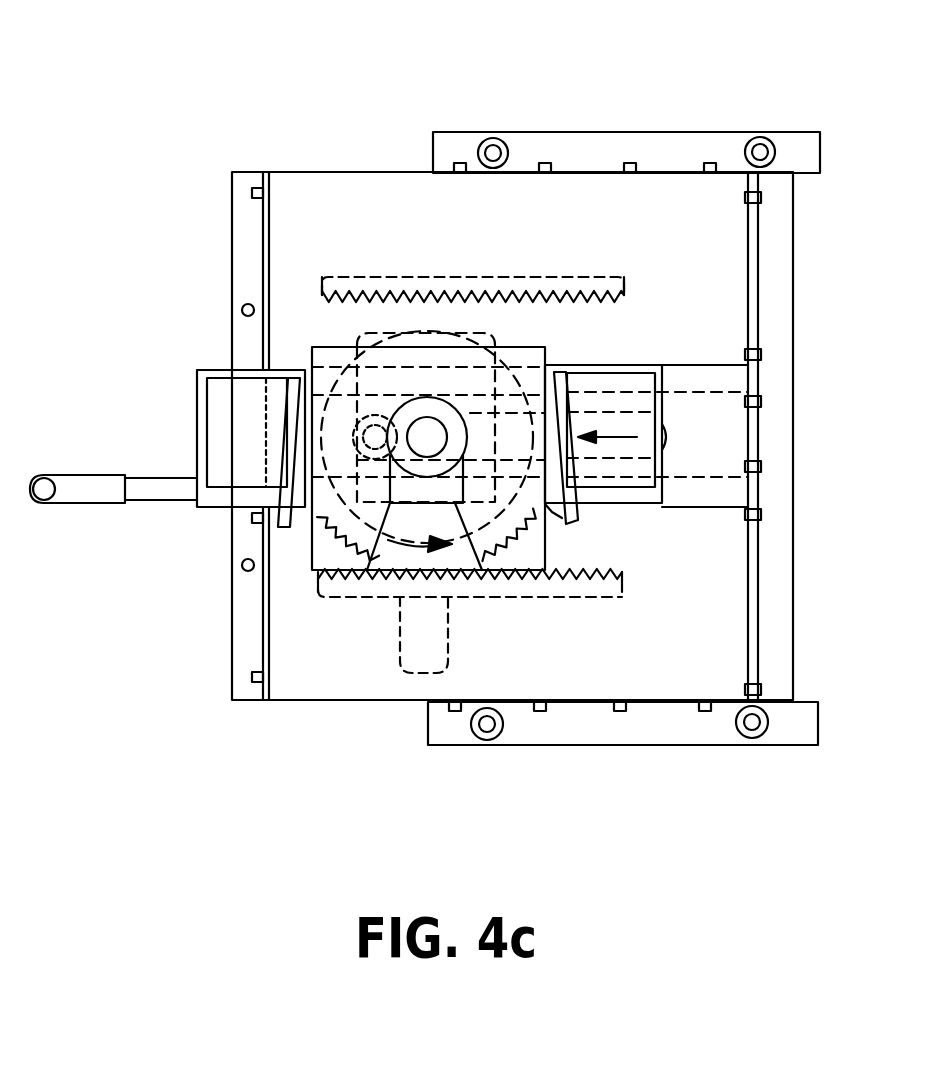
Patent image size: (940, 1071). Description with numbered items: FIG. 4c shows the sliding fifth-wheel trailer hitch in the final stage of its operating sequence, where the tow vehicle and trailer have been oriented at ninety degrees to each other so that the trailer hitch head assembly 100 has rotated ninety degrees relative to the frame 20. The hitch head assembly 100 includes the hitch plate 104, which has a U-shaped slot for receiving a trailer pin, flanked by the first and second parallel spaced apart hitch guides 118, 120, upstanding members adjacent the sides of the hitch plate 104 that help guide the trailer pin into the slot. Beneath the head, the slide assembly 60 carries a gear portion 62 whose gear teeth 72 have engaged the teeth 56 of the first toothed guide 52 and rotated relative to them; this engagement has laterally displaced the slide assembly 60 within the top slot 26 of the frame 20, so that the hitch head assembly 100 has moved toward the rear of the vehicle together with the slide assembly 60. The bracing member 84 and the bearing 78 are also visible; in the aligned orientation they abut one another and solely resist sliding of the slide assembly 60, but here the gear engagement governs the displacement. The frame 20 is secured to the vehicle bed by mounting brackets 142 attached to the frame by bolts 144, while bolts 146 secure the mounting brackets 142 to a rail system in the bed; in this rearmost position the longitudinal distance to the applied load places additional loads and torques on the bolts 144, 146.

The frame 20 is at (733, 230).
The top slot 26 is at (620, 413).
The first toothed guide 52 is at (592, 600).
The teeth 56 is at (590, 570).
The slide assembly 60 is at (456, 372).
The gear portion 62 is at (340, 510).
The gear teeth 72 is at (543, 508).
The bearing 78 is at (368, 418).
The bracing member 84 is at (397, 643).
The trailer hitch head assembly 100 is at (205, 373).
The hitch plate 104 is at (534, 345).
The first hitch guide 118 is at (572, 398).
The second hitch guide 120 is at (268, 408).
The mounting bracket 142 is at (640, 745).
The bolts 144 is at (706, 713).
The bolts 146 is at (486, 742).